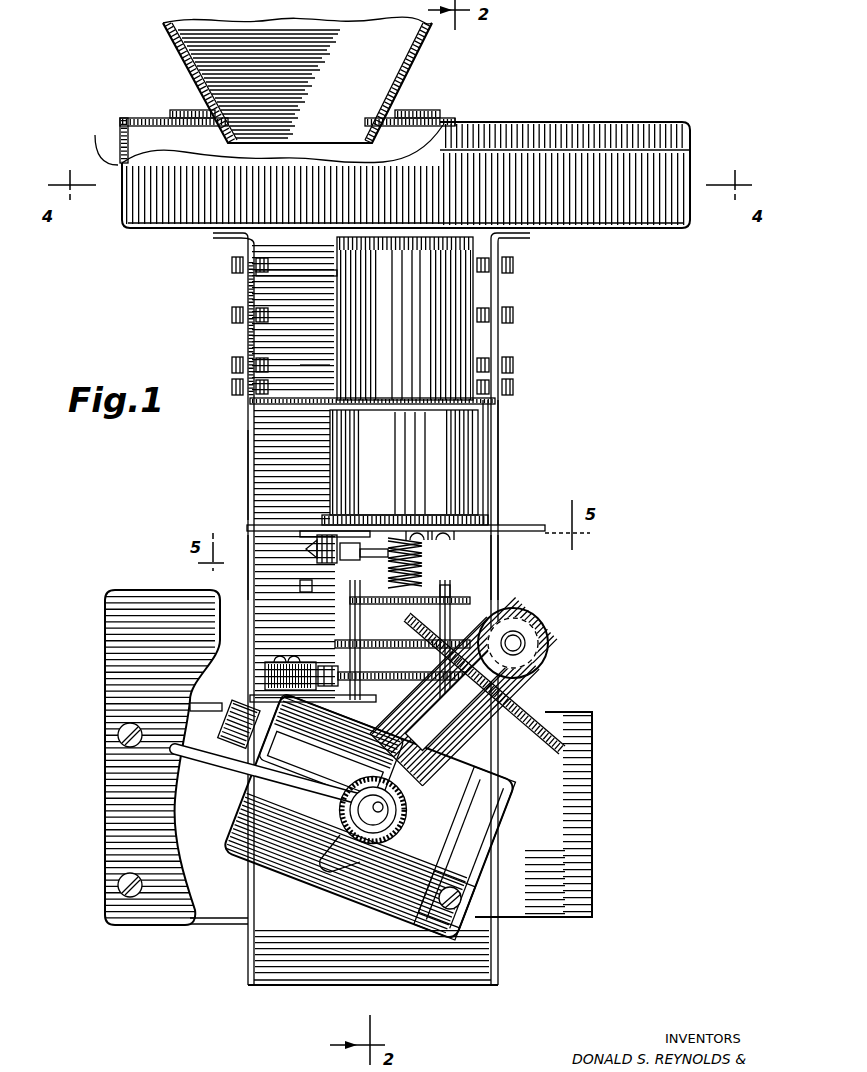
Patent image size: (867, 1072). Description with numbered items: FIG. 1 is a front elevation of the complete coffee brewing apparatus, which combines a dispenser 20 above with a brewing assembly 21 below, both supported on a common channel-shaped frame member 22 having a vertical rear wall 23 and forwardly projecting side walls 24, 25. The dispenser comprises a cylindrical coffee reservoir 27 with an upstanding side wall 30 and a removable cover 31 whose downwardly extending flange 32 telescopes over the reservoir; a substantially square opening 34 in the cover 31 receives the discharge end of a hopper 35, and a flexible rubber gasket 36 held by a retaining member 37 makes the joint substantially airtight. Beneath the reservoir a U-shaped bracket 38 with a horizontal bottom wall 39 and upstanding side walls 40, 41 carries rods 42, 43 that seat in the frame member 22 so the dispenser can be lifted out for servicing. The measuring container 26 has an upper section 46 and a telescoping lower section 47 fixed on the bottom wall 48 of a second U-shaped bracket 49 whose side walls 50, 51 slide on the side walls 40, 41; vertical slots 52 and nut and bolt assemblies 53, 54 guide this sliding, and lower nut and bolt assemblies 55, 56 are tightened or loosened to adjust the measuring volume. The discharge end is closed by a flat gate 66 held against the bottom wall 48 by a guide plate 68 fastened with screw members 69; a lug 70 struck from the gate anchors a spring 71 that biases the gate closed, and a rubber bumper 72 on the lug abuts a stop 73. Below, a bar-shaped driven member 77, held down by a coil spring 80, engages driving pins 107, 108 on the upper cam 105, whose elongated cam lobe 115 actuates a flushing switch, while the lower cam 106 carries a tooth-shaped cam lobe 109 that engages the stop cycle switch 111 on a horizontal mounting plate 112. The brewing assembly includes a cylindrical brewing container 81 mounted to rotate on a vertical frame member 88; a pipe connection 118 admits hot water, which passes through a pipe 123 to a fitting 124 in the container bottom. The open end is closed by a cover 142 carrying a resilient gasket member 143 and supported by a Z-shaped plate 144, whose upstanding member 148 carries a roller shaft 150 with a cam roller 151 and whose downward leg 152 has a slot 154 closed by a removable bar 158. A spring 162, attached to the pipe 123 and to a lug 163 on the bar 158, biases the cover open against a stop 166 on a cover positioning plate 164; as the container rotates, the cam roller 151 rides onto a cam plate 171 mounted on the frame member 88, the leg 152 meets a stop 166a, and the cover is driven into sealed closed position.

The dispenser 20 is at (657, 105).
The brewing assembly 21 is at (596, 685).
The frame member 22 is at (503, 556).
The rear wall 23 is at (265, 452).
The side wall 24 is at (250, 550).
The side wall 25 is at (502, 565).
The measuring container 26 is at (334, 330).
The coffee reservoir 27 is at (112, 160).
The side wall 30 is at (138, 142).
The cover 31 is at (450, 122).
The flange 32 is at (140, 104).
The opening 34 is at (408, 126).
The hopper 35 is at (200, 57).
The gasket 36 is at (372, 141).
The retaining member 37 is at (185, 112).
The U-shaped bracket 38 is at (300, 405).
The bottom wall 39 is at (326, 408).
The side wall 40 is at (262, 292).
The side wall 41 is at (498, 300).
The rod 42 is at (315, 254).
The rod 43 is at (300, 365).
The upper section 46 is at (342, 305).
The lower section 47 is at (345, 465).
The bottom wall 48 is at (283, 522).
The U-shaped bracket 49 is at (504, 468).
The side wall 50 is at (246, 478).
The side wall 51 is at (500, 425).
The vertical slot 52 is at (246, 333).
The nut and bolt assembly 53 is at (240, 305).
The nut and bolt assembly 54 is at (508, 312).
The lower nut and bolt assembly 55 is at (240, 385).
The lower nut and bolt assembly 56 is at (508, 385).
The gate 66 is at (535, 526).
The guide plate 68 is at (421, 546).
The screw members 69 is at (446, 546).
The lug 70 is at (322, 560).
The spring 71 is at (365, 557).
The rubber bumper 72 is at (303, 548).
The stop 73 is at (340, 556).
The driven member 77 is at (470, 603).
The coil spring 80 is at (423, 572).
The brewing container 81 is at (410, 930).
The frame member 88 is at (592, 775).
The upper cam 105 is at (392, 641).
The lower cam 106 is at (410, 713).
The driving pin 107 is at (466, 580).
The driving pin 108 is at (352, 585).
The cam lobe 109 is at (336, 676).
The stop cycle switch 111 is at (290, 665).
The mounting plate 112 is at (255, 693).
The cam lobe 115 is at (348, 635).
The pipe connection 118 is at (335, 750).
The pipe 123 is at (215, 762).
The fitting 124 is at (247, 740).
The cover 142 is at (548, 706).
The gasket member 143 is at (575, 748).
The Z-shaped plate 144 is at (494, 739).
The member 148 is at (548, 652).
The roller shaft 150 is at (516, 640).
The cam roller 151 is at (546, 636).
The leg 152 is at (505, 788).
The slot 154 is at (420, 755).
The bar 158 is at (300, 875).
The spring 162 is at (412, 840).
The lug 163 is at (420, 868).
The cover positioning plate 164 is at (480, 845).
The stop 166 is at (395, 733).
The stop 166a is at (470, 872).
The cam plate 171 is at (105, 628).